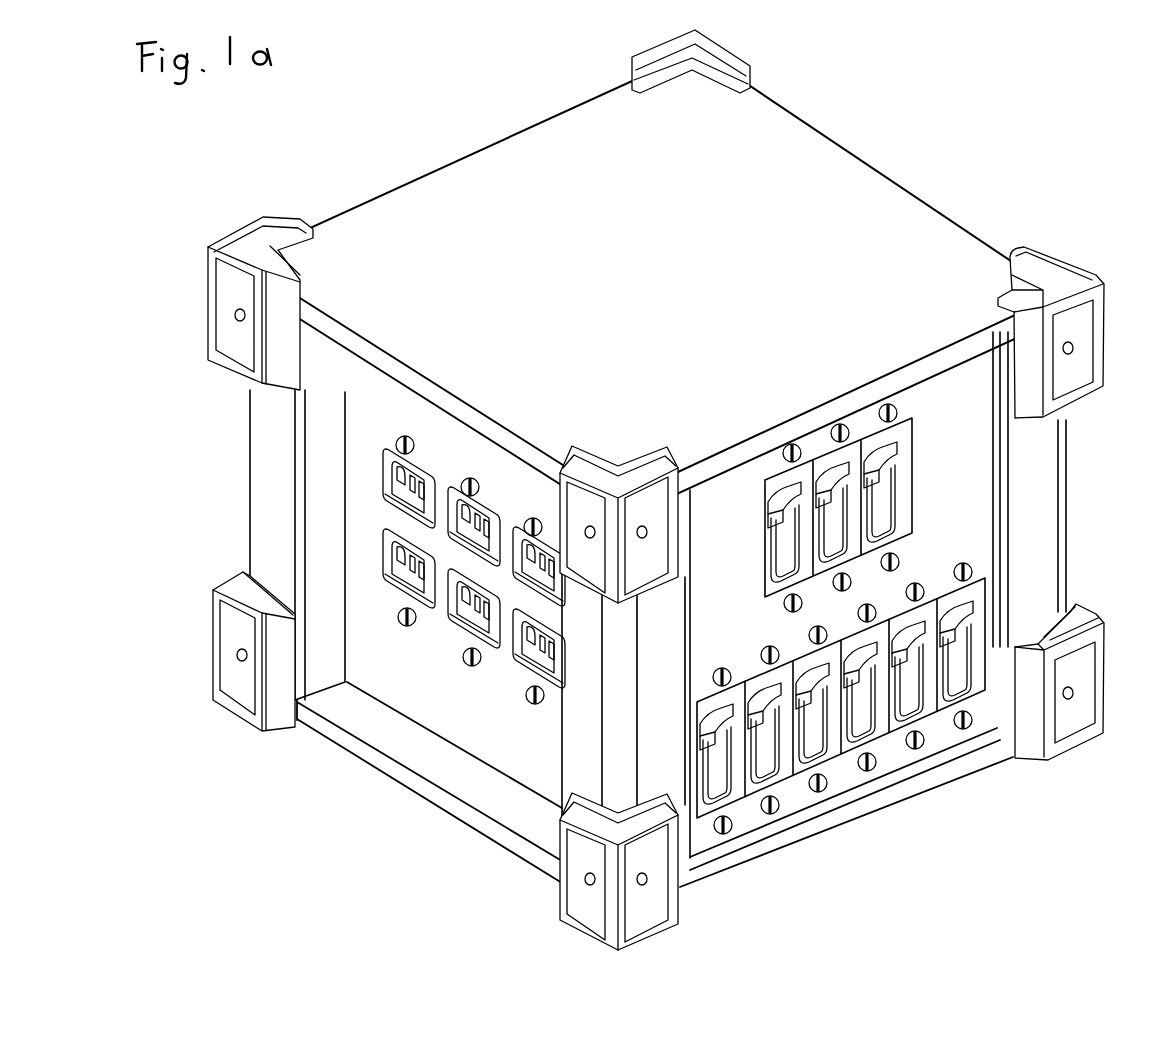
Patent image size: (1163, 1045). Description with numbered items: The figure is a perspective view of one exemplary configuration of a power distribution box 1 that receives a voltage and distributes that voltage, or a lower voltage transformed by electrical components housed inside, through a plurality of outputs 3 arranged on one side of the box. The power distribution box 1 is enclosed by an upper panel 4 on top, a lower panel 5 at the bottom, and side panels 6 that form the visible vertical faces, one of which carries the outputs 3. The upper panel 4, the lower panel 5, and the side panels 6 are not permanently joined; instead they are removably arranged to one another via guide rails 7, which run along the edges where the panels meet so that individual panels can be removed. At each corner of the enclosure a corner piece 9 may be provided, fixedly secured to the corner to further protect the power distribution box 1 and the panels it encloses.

The power distribution box 1 is at (639, 490).
The outputs 3 is at (372, 557).
The upper panel 4 is at (925, 230).
The lower panel 5 is at (480, 823).
The side panels 6 is at (417, 707).
The guide rails 7 is at (273, 465).
The corner piece 9 is at (207, 240).